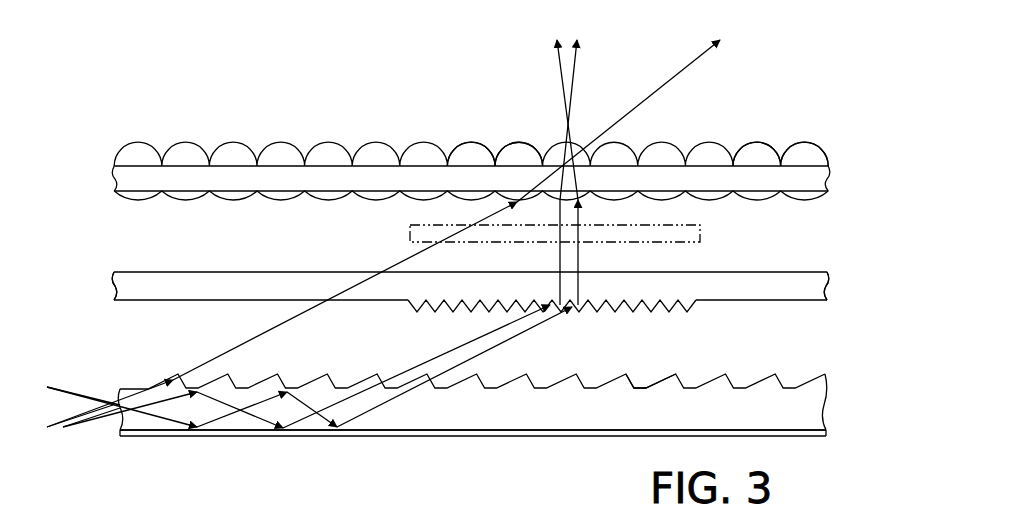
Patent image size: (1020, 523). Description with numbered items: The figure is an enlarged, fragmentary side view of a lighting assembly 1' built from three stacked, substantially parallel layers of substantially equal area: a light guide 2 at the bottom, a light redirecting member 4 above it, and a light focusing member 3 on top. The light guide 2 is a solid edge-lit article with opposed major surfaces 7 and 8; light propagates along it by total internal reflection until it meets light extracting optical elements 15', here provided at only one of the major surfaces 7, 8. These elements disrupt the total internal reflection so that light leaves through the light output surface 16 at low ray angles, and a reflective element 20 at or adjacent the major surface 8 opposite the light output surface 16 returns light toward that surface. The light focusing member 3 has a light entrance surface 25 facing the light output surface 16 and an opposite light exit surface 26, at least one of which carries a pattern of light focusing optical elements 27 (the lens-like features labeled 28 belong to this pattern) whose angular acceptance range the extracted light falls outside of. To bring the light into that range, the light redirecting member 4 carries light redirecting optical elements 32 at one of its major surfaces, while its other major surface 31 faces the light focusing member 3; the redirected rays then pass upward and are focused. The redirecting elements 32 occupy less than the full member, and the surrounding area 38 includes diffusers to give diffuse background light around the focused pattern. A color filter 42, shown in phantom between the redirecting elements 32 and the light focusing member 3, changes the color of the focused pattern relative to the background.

The lighting assembly 1' is at (128, 99).
The light guide 2 is at (320, 447).
The light focusing member 3 is at (471, 158).
The light redirecting member 4 is at (485, 278).
The major surface 7 is at (472, 352).
The major surface 8 is at (528, 430).
The light extracting optical elements 15' is at (690, 351).
The light output surface 16 is at (495, 372).
The reflective element 20 is at (420, 437).
The light entrance surface 25 is at (670, 195).
The light exit surface 26 is at (468, 160).
The light focusing optical elements 27 is at (758, 153).
The lens element 28 is at (517, 152).
The second major surface 31 is at (514, 271).
The light redirecting optical elements 32 is at (587, 310).
The area of the light redirecting member 38 is at (210, 301).
The color filter 42 is at (410, 228).